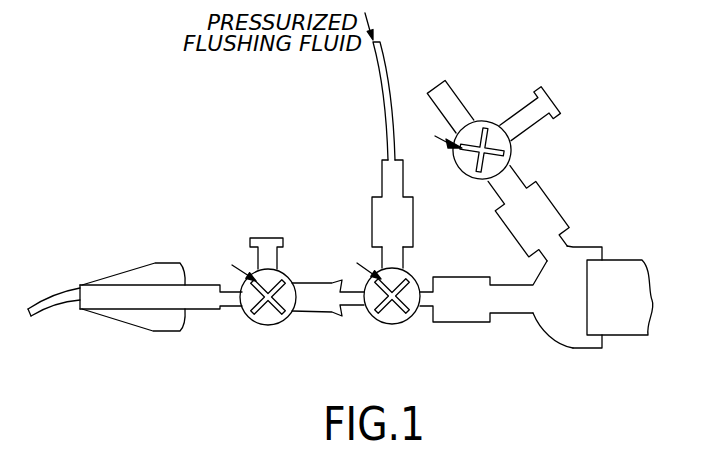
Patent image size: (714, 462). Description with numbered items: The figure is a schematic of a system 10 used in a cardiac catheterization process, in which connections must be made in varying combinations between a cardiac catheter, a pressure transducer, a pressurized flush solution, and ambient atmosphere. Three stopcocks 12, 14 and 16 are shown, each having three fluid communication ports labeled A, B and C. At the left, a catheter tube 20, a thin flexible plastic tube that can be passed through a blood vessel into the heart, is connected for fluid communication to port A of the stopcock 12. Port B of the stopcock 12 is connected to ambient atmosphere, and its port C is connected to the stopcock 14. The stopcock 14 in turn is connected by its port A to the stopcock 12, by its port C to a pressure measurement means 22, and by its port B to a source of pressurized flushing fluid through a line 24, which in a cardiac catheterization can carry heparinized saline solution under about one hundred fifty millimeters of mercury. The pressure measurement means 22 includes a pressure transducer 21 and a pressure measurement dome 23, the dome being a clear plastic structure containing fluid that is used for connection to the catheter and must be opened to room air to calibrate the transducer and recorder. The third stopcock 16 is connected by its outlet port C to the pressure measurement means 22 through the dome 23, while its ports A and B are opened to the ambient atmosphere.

The system 10 is at (268, 196).
The stopcock 12 is at (260, 327).
The stopcock 14 is at (383, 325).
The third stopcock 16 is at (513, 146).
The catheter tube 20 is at (58, 293).
The pressure transducer 21 is at (632, 260).
The pressure measurement means 22 is at (516, 321).
The pressure measurement dome 23 is at (552, 340).
The line 24 is at (377, 67).